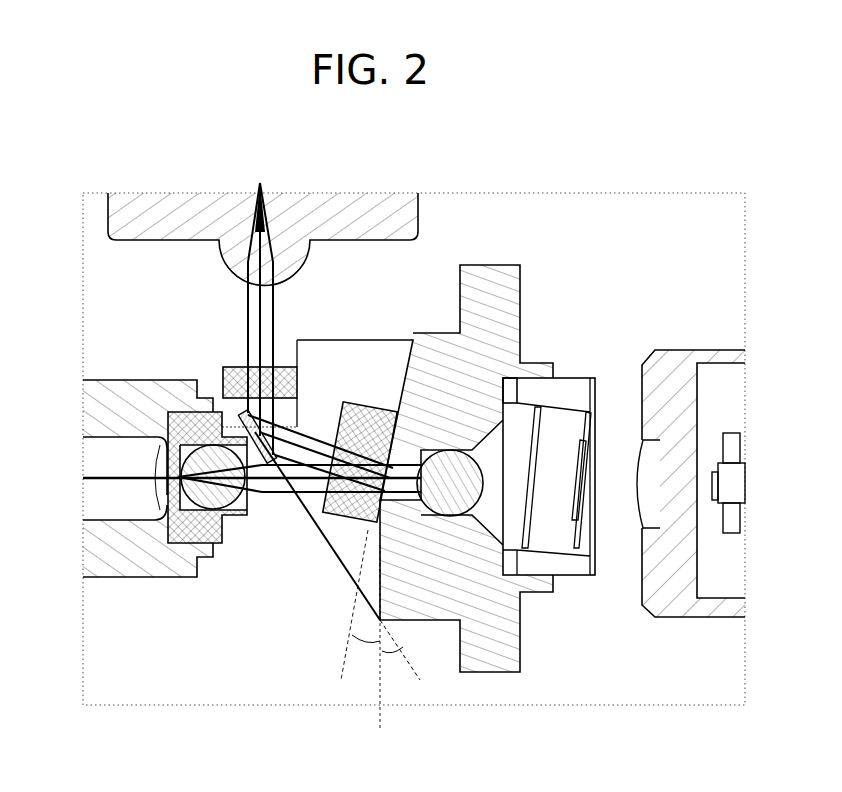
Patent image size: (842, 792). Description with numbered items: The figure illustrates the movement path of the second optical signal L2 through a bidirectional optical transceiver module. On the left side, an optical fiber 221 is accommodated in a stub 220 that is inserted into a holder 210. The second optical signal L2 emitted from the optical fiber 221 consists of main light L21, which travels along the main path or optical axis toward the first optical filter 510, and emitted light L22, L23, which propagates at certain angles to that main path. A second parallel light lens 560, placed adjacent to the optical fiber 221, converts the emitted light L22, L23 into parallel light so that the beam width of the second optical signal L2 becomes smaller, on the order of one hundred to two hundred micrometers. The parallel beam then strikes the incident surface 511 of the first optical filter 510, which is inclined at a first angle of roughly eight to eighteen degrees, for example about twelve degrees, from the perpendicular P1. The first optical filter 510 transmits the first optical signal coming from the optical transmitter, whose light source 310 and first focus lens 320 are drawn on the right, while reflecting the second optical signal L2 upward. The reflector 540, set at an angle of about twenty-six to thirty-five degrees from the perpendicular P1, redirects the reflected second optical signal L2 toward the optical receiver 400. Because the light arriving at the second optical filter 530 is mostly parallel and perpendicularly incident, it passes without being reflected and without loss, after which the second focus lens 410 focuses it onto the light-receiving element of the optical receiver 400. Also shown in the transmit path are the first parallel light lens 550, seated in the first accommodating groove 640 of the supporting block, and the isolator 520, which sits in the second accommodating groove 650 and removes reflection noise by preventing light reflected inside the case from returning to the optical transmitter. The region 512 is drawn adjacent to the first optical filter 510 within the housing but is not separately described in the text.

The optical receiver 400 is at (147, 208).
The second focus lens 410 is at (232, 255).
The first optical filter 510 is at (362, 410).
The incident surface 511 is at (338, 420).
The lens holder portion 512 is at (405, 432).
The isolator 520 is at (585, 578).
The second optical filter 530 is at (222, 380).
The reflector 540 is at (205, 417).
The first parallel light lens 550 is at (393, 480).
The second parallel light lens 560 is at (178, 543).
The first accommodating groove 640 is at (455, 495).
The second accommodating groove 650 is at (560, 394).
The holder 210 is at (95, 565).
The stub 220 is at (83, 507).
The optical fiber 221 is at (165, 498).
The light source 310 is at (703, 470).
The first focus lens 320 is at (688, 508).
The main light L21 is at (165, 452).
The emitted light L22 is at (163, 437).
The emitted light L23 is at (178, 488).
The second optical signal L2 is at (271, 504).
The perpendicular P1 is at (364, 644).